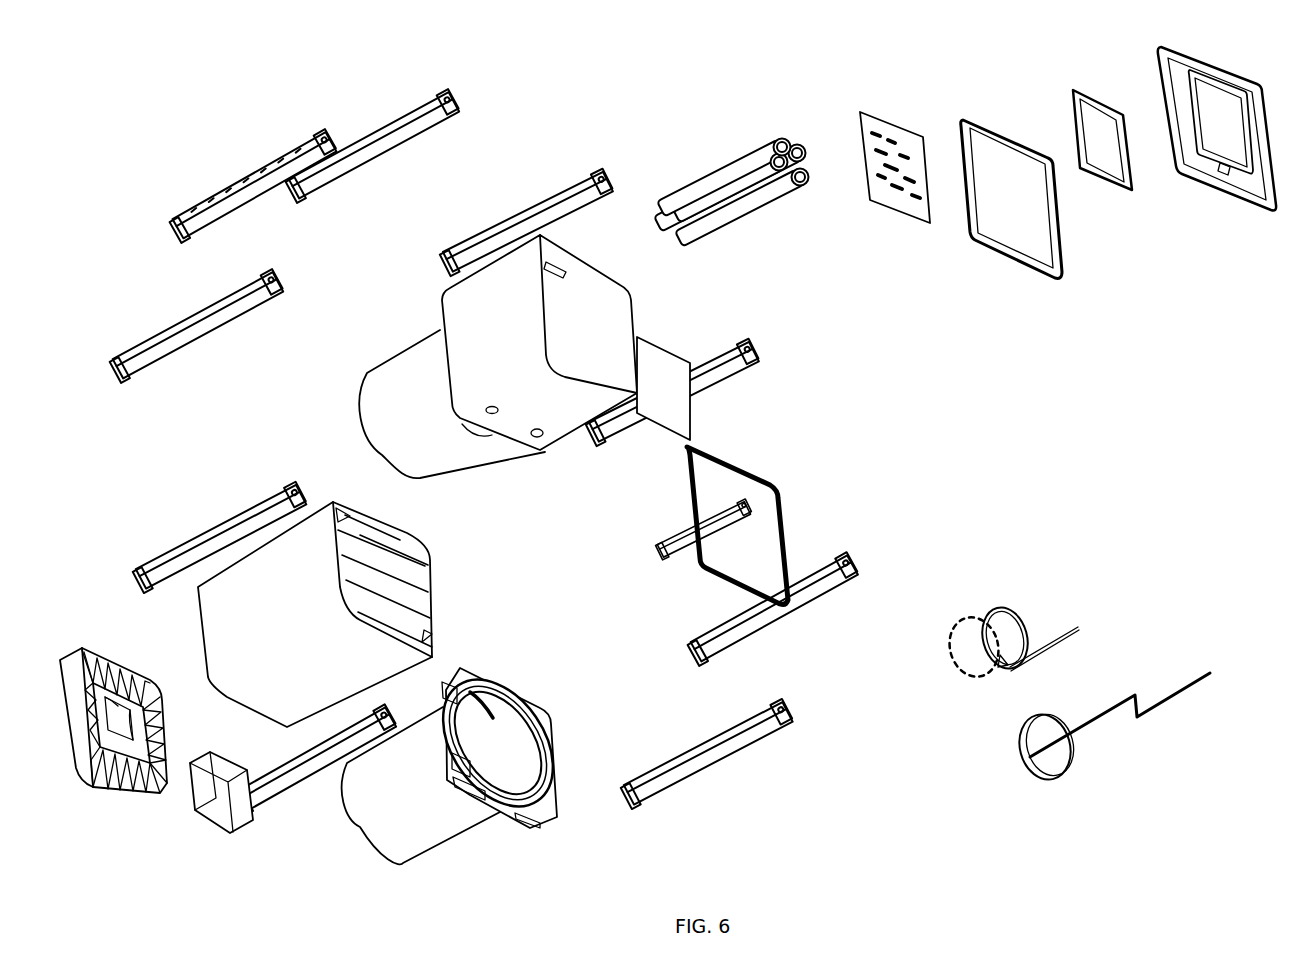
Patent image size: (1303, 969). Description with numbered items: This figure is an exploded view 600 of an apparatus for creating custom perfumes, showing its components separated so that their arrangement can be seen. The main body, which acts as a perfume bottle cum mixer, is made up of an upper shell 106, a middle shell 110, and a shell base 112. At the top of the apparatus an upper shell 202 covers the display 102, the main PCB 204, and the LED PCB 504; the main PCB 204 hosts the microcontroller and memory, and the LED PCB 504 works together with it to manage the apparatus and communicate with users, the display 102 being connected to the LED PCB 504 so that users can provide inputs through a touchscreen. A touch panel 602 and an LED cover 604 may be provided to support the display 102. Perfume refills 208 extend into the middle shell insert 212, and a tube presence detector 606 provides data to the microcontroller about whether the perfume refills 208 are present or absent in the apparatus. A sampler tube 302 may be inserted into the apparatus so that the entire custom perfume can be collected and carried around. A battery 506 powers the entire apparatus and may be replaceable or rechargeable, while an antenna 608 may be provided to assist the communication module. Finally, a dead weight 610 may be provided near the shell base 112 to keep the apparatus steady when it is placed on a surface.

The display 102 is at (1090, 107).
The upper shell 106 is at (455, 324).
The middle shell 110 is at (436, 598).
The shell base 112 is at (122, 788).
The upper shell 202 is at (1237, 207).
The main printed circuit board 204 is at (887, 130).
The perfume refills 208 is at (585, 180).
The middle shell insert 212 is at (457, 460).
The sampler tube 302 is at (657, 566).
The LED printed circuit board 504 is at (990, 120).
The battery 506 is at (770, 142).
The exploded view 600 is at (1008, 865).
The touch panel 602 is at (680, 410).
The LED cover 604 is at (768, 477).
The tube presence detector 606 is at (1008, 610).
The antenna 608 is at (1070, 758).
The dead weight 610 is at (237, 833).